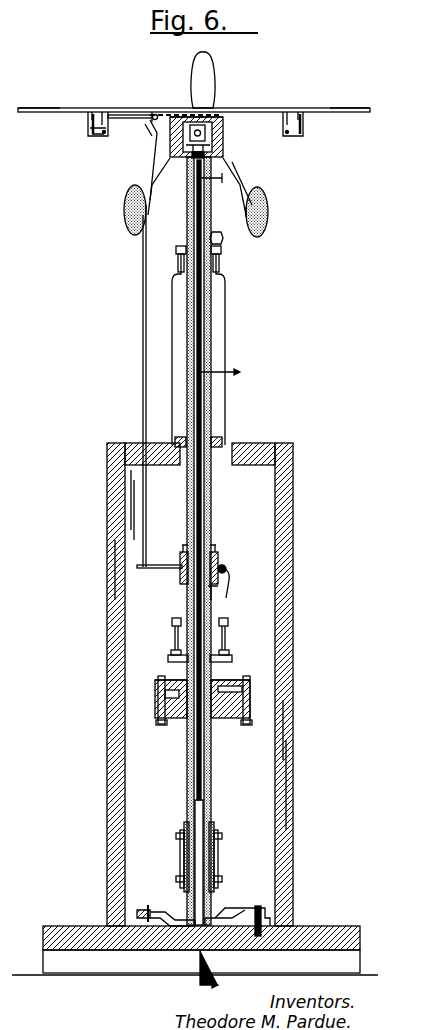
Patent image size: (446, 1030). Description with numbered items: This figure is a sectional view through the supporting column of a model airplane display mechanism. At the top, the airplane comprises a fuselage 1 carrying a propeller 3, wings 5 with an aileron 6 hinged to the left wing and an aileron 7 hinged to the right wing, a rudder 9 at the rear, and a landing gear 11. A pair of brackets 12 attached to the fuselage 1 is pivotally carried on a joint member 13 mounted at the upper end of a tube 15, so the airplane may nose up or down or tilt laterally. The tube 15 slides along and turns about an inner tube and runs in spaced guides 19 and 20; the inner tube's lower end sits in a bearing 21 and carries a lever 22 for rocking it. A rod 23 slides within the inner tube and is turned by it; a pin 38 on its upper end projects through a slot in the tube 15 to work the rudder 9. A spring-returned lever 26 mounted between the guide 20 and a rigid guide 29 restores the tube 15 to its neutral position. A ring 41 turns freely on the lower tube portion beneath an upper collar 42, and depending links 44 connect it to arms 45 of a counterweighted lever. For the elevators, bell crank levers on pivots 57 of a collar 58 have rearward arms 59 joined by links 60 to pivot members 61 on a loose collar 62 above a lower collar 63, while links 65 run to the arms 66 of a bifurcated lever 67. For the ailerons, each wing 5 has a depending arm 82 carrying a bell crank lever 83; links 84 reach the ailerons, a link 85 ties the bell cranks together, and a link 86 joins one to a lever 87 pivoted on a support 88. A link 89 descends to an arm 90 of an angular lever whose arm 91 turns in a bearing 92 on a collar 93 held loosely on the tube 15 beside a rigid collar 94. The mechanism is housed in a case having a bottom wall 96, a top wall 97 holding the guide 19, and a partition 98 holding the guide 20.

The fuselage 1 is at (212, 112).
The propeller 3 is at (205, 66).
The wings 5 is at (236, 108).
The aileron 6 is at (42, 108).
The aileron 7 is at (340, 108).
The rudder 9 is at (224, 679).
The landing gear 11 is at (128, 222).
The brackets 12 is at (204, 134).
The joint member 13 is at (206, 150).
The tube 15 is at (210, 333).
The guide 19 is at (222, 440).
The guide 20 is at (250, 690).
The bearing 21 is at (216, 926).
The lever 22 is at (170, 926).
The rod 23 is at (199, 308).
The lever 26 is at (168, 725).
The rigid guide 29 is at (250, 682).
The pin 38 is at (220, 180).
The ring 41 is at (218, 838).
The upper collar 42 is at (213, 830).
The depending links 44 is at (176, 838).
The arms 45 is at (176, 878).
The pivots 57 is at (176, 249).
The collar 58 is at (224, 236).
The rearwardly extended arms 59 is at (178, 266).
The links 60 is at (172, 400).
The pivot members 61 is at (171, 652).
The collar 62 is at (232, 660).
The lower collar 63 is at (172, 662).
The links 65 is at (175, 636).
The arms 66 is at (175, 618).
The bifurcated lever 67 is at (213, 590).
The depending arm 82 is at (99, 108).
The bell crank lever 83 is at (98, 137).
The links 84 is at (92, 126).
The link 85 is at (158, 113).
The link 86 is at (130, 115).
The lever 87 is at (148, 134).
The support 88 is at (165, 113).
The link 89 is at (143, 300).
The arm 90 is at (156, 569).
The arm 91 is at (230, 572).
The bearing 92 is at (220, 572).
The collar 93 is at (224, 566).
The collar 94 is at (214, 550).
The bottom wall 96 is at (278, 950).
The top wall 97 is at (255, 455).
The intermediate horizontal partition 98 is at (244, 725).